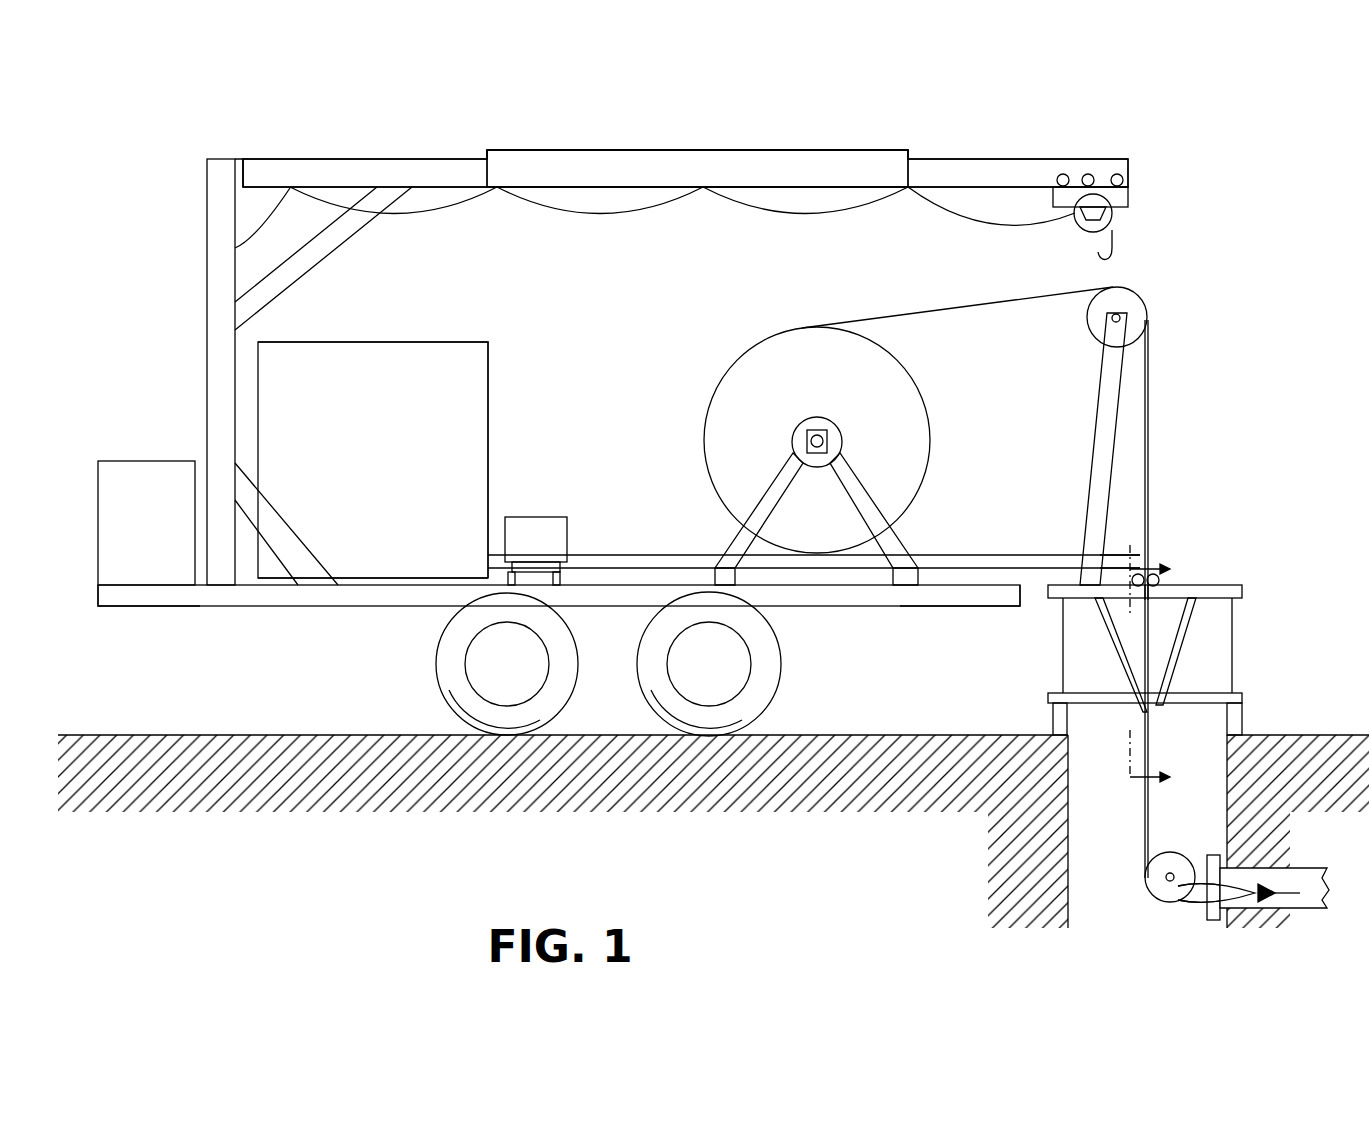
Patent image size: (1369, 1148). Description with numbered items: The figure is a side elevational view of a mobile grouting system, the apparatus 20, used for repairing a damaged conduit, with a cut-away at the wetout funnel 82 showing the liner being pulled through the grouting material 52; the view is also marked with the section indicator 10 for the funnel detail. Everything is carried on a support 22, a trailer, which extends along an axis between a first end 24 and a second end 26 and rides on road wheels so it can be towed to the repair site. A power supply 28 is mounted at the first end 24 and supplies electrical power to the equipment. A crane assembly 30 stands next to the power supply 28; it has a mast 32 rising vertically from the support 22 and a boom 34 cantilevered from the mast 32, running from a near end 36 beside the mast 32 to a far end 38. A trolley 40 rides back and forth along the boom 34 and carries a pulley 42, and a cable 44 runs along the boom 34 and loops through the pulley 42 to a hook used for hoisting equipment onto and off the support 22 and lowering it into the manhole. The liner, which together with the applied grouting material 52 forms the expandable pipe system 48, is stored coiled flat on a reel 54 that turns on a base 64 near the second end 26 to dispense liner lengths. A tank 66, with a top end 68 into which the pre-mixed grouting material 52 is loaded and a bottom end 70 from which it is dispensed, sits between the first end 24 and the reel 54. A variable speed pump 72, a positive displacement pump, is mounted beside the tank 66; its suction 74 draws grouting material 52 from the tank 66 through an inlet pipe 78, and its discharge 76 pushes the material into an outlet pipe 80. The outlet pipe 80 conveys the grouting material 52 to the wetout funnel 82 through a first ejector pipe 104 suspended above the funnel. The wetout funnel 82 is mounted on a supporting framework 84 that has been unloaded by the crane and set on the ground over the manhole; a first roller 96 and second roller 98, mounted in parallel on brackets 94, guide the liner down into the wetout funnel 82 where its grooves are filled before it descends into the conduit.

The liner installation apparatus 10 is at (1127, 665).
The apparatus 20 is at (1111, 137).
The support 22 is at (348, 606).
The first end 24 is at (98, 606).
The second end 26 is at (982, 606).
The power supply 28 is at (122, 523).
The crane assembly 30 is at (450, 158).
The mast 32 is at (210, 318).
The boom 34 is at (940, 170).
The near end 36 is at (243, 158).
The far end 38 is at (1122, 162).
The trolley 40 is at (1120, 198).
The pulley 42 is at (1088, 228).
The cable 44 is at (788, 206).
The expandable pipe system 48 is at (1118, 262).
The grouting material 52 is at (1150, 387).
The reel 54 is at (807, 350).
The base 64 is at (898, 557).
The tank 66 is at (460, 436).
The top end 68 is at (403, 342).
The bottom end 70 is at (440, 578).
The variable speed pump 72 is at (540, 517).
The suction 74 is at (505, 572).
The discharge 76 is at (560, 572).
The inlet pipe 78 is at (510, 562).
The outlet pipe 80 is at (595, 555).
The wetout funnel 82 is at (1220, 653).
The supporting framework 84 is at (1243, 722).
The bracket 94 is at (1133, 675).
The first roller 96 is at (1140, 588).
The second roller 98 is at (1160, 580).
The first ejector pipe 104 is at (1134, 560).